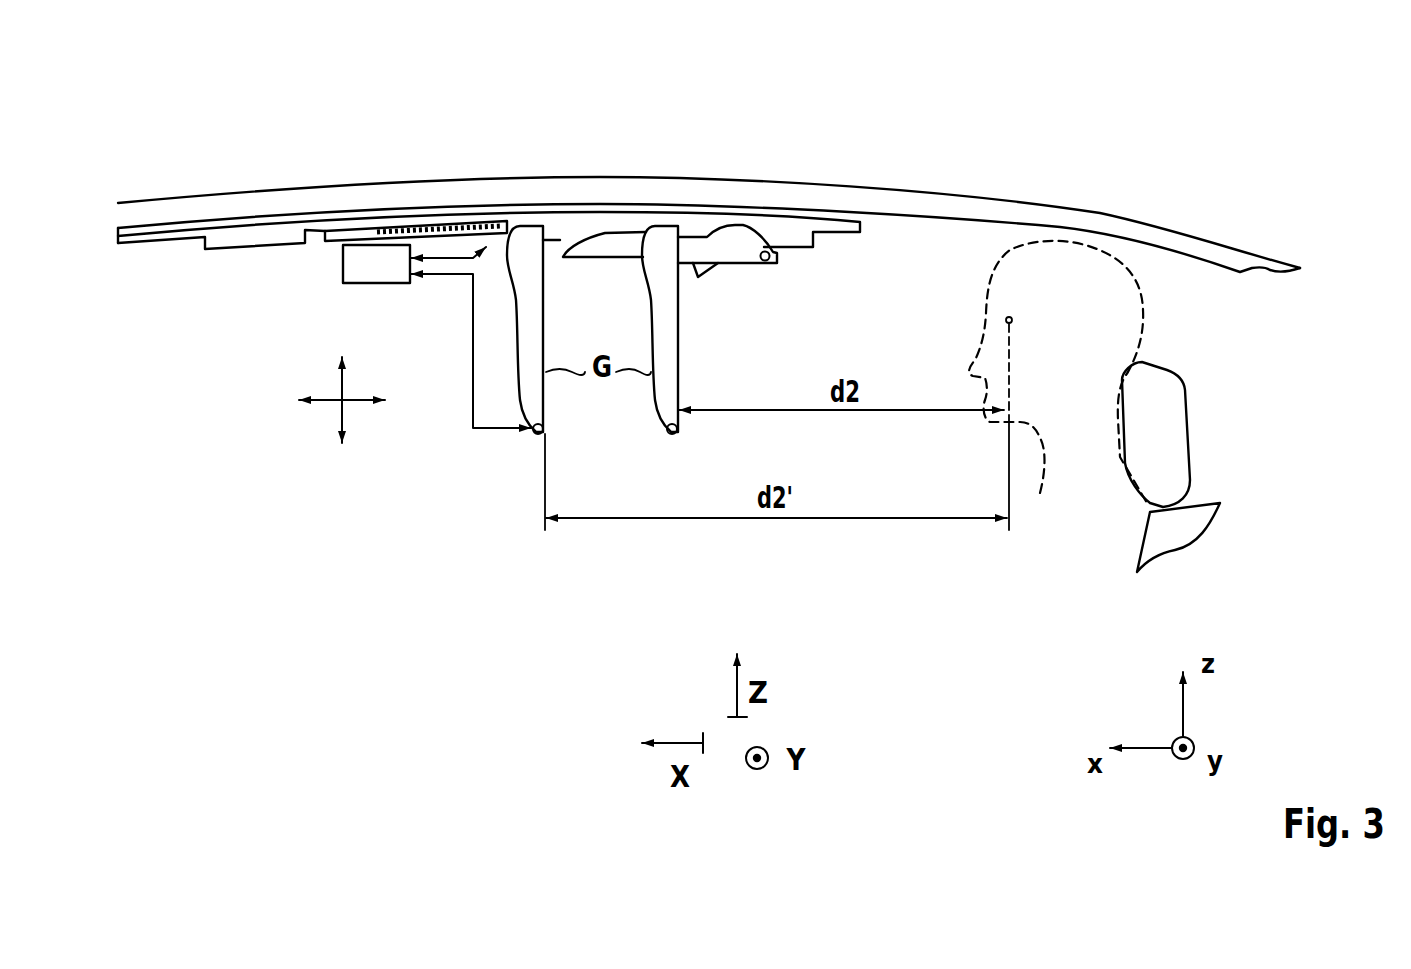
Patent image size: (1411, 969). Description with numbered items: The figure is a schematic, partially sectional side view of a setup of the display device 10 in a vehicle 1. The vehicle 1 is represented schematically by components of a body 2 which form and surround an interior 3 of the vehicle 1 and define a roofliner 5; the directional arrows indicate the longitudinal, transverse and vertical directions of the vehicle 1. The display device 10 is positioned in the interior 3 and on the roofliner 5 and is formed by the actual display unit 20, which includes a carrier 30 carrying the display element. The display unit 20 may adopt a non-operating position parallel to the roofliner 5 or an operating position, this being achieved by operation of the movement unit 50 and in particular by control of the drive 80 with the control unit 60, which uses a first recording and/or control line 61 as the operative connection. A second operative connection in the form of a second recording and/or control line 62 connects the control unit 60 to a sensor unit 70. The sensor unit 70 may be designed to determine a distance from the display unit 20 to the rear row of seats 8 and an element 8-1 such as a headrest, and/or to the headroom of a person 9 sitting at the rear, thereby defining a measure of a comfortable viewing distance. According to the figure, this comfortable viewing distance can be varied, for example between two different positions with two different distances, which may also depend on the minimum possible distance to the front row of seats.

The vehicle 1 is at (709, 183).
The body 2 is at (847, 183).
The interior 3 is at (342, 383).
The roofliner 5 is at (260, 249).
The rear seat/row of seats 8 is at (1190, 528).
The rear headrest 8-1 is at (1170, 393).
The rear passenger/occupant 9 is at (1123, 322).
The display device 10 is at (591, 325).
The display unit 20 is at (655, 361).
The carrier 30 is at (682, 330).
The movement unit 50 is at (767, 204).
The control unit 60 is at (380, 263).
The operative connection, recording and/or control line 61 is at (443, 253).
The operative connection, recording and/or control line 62 is at (443, 278).
The sensor unit 70 is at (530, 437).
The drive unit 80 is at (502, 229).